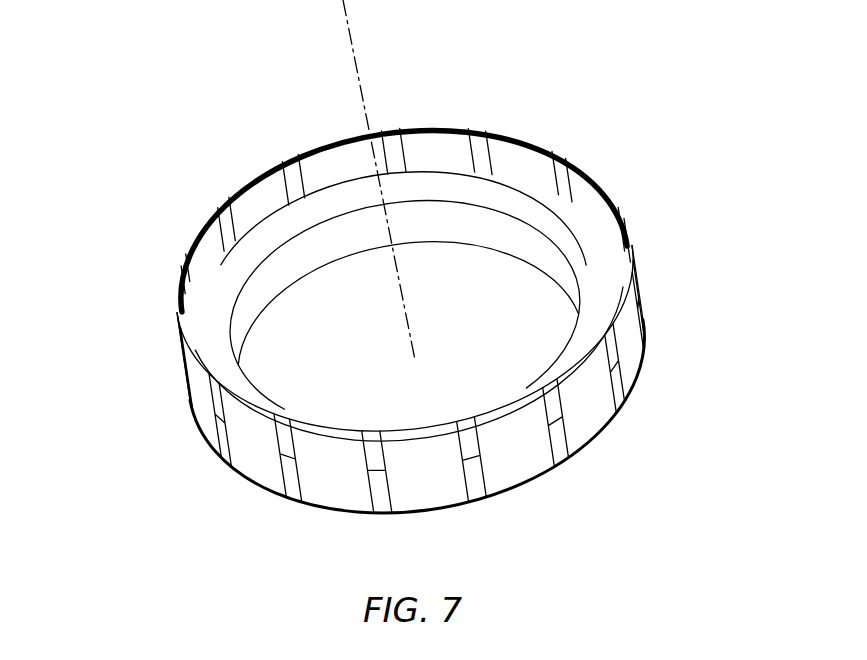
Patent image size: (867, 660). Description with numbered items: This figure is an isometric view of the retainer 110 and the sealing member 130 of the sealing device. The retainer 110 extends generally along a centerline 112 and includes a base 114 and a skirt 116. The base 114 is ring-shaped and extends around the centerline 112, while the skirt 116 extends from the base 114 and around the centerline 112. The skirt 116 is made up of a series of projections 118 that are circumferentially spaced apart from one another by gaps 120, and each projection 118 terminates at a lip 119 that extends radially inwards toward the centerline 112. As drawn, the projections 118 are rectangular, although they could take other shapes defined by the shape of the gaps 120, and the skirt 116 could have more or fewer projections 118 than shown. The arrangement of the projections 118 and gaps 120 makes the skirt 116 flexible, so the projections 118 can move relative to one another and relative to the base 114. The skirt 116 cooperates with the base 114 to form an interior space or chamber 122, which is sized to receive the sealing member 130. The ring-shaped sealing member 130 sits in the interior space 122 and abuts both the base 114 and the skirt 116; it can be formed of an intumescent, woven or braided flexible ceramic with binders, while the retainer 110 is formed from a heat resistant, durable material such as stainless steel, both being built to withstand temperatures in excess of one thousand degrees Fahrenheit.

The retainer 110 is at (664, 382).
The centerline 112 is at (354, 52).
The base 114 is at (560, 457).
The skirt 116 is at (662, 271).
The projection 118 is at (493, 147).
The lip 119 is at (537, 153).
The gap 120 is at (385, 123).
The interior space or chamber 122 is at (262, 205).
The sealing member 130 is at (222, 283).